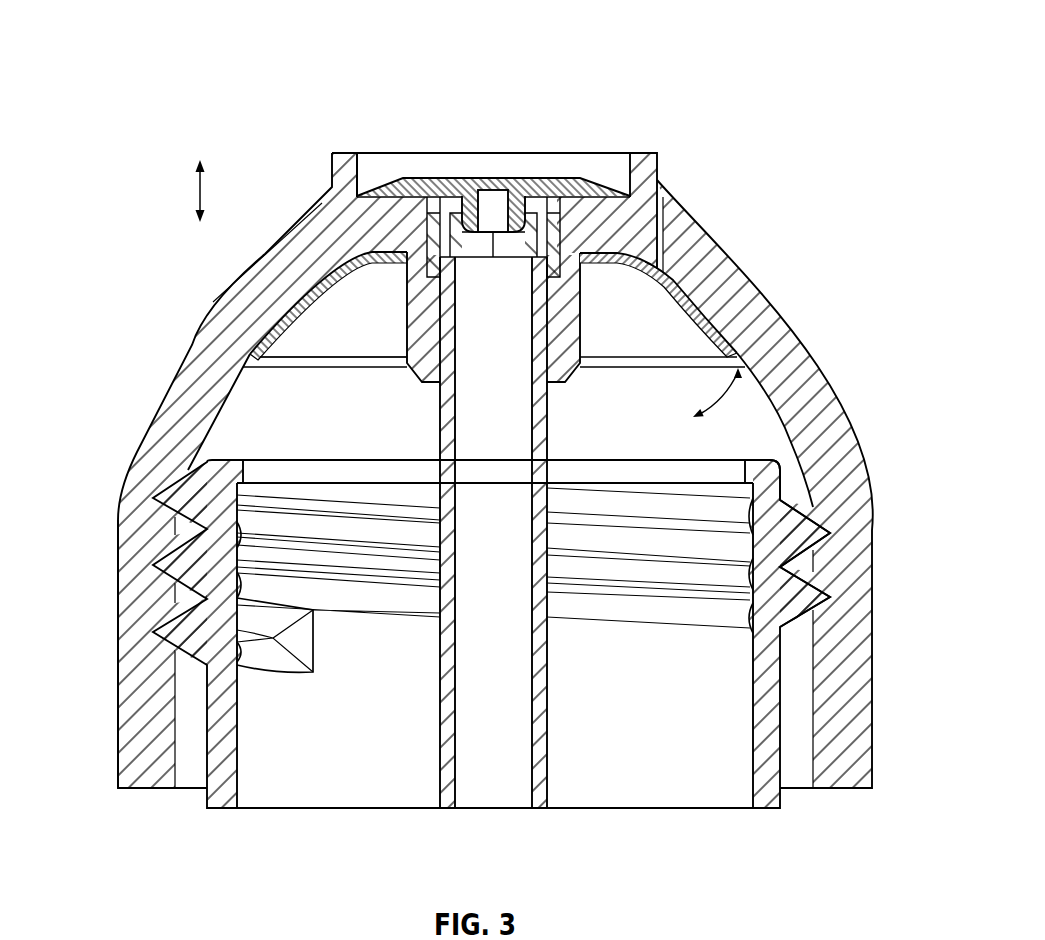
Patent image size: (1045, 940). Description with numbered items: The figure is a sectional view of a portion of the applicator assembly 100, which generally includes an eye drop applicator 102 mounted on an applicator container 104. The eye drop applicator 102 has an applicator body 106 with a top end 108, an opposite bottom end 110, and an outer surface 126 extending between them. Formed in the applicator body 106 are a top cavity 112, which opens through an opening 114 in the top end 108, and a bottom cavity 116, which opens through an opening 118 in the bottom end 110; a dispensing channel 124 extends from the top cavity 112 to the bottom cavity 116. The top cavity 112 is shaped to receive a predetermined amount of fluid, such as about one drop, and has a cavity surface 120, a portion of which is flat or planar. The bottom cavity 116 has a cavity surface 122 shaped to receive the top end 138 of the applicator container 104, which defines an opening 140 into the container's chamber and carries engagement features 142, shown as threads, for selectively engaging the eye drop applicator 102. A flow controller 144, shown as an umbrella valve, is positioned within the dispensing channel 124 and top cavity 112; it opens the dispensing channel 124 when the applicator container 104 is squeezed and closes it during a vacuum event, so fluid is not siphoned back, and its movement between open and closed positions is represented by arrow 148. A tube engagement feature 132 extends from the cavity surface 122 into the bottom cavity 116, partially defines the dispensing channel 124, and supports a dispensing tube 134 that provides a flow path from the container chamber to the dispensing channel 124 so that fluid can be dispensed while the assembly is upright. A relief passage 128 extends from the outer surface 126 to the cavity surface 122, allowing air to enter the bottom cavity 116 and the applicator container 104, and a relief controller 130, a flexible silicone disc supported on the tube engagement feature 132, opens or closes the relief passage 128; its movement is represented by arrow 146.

The applicator assembly 100 is at (136, 100).
The eye drop applicator 102 is at (197, 345).
The applicator container 104 is at (243, 780).
The applicator body 106 is at (858, 667).
The top end 108 is at (647, 152).
The bottom end 110 is at (841, 788).
The top cavity 112 is at (377, 157).
The opening 114 is at (590, 160).
The bottom cavity 116 is at (247, 407).
The opening 118 is at (800, 803).
The cavity surface 120 is at (413, 163).
The cavity surface 122 is at (185, 763).
The dispensing channel 124 is at (437, 233).
The outer surface 126 is at (108, 617).
The relief passage 128 is at (673, 222).
The relief controller 130 is at (693, 307).
The tube engagement feature 132 is at (660, 278).
The dispensing tube 134 is at (550, 748).
The top end 138 is at (780, 460).
The opening 140 is at (328, 455).
The engagement features 142 is at (813, 533).
The flow controller 144 is at (493, 193).
The arrow 146 is at (737, 397).
The arrow 148 is at (198, 190).